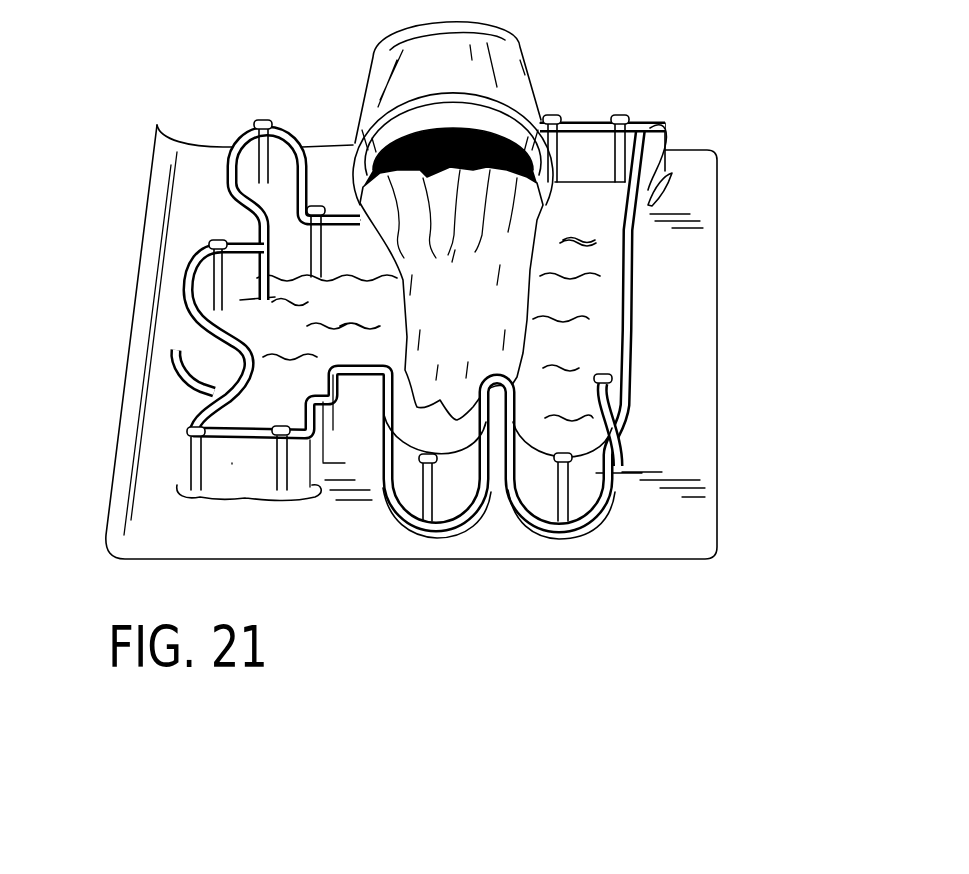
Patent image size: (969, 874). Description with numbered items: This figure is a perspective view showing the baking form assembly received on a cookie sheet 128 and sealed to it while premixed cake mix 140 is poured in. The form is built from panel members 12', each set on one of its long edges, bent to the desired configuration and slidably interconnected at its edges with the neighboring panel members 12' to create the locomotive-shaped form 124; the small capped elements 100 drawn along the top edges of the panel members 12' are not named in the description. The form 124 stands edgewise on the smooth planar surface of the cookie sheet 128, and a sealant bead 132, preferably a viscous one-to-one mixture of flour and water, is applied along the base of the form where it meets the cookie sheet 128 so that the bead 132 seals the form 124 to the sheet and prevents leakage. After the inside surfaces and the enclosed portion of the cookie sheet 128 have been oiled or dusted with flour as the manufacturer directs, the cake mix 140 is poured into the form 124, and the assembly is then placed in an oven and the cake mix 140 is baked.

The cookie sheet 128 is at (665, 535).
The cake mix 140 is at (483, 313).
The panel member 12' is at (366, 380).
The support posts 100 is at (262, 120).
The sealant bead 132 is at (278, 493).
The locomotive-shaped form 124 is at (222, 472).